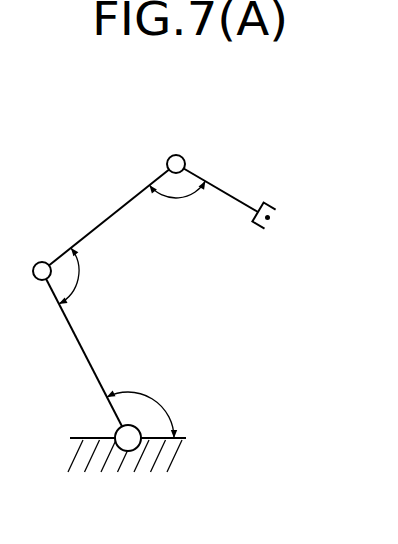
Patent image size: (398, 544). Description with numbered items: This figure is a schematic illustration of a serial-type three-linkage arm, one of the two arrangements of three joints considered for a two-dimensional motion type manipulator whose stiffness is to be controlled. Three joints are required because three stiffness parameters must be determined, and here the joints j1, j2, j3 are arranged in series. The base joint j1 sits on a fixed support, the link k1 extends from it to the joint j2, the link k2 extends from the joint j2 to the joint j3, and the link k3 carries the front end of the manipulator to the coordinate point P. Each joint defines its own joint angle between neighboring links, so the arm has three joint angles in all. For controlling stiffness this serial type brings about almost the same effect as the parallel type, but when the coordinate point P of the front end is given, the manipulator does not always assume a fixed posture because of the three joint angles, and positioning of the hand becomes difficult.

The joint j1 is at (115, 432).
The joint j2 is at (40, 261).
The joint j3 is at (185, 162).
The link k1 is at (85, 354).
The link k2 is at (104, 243).
The link k3 is at (214, 168).
The coordinate point of the front end of the manipulator P is at (268, 220).